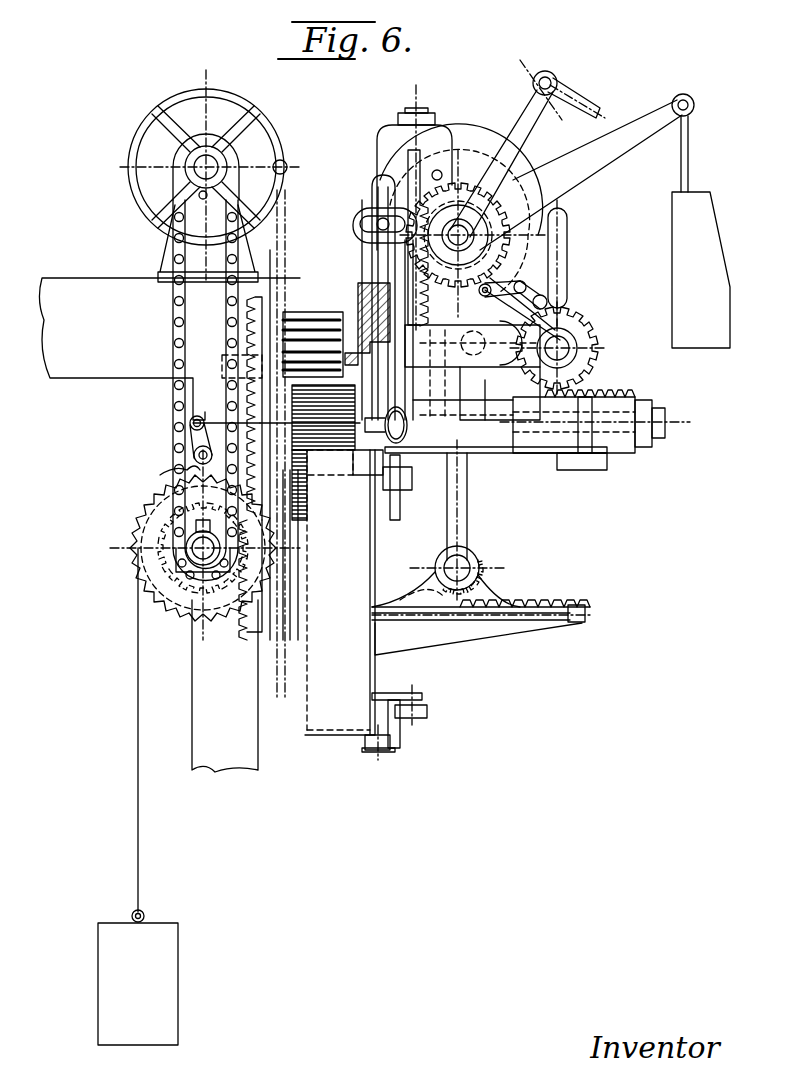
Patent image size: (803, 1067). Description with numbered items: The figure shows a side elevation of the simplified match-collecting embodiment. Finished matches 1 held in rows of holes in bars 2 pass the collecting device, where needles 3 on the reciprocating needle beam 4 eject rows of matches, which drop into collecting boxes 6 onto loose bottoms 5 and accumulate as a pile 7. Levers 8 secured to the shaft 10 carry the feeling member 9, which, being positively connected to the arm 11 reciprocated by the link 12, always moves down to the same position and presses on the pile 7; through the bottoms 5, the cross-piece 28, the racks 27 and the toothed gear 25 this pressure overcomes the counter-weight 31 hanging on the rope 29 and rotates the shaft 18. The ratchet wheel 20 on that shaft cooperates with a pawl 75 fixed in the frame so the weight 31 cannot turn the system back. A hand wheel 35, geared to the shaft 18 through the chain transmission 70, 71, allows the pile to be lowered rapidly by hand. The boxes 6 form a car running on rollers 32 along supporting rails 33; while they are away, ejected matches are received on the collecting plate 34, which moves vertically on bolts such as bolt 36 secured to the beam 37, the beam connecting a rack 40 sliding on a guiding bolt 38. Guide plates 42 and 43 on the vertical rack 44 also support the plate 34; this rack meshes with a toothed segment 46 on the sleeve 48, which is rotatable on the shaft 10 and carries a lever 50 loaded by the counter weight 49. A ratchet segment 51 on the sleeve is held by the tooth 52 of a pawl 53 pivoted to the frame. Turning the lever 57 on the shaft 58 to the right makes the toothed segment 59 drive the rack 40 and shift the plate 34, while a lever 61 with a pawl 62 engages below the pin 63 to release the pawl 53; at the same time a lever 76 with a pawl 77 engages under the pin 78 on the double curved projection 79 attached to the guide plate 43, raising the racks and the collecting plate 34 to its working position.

The finished matches 1 is at (325, 318).
The bars 2 is at (283, 264).
The needles 3 is at (285, 322).
The needle beam 4 is at (224, 362).
The loose bottoms 5 is at (342, 578).
The collecting boxes 6 is at (305, 718).
The pile of finished matches 7 is at (356, 405).
The levers 8 is at (360, 212).
The feeling member 9 is at (358, 268).
The shaft 10 is at (462, 228).
The lever 11 is at (525, 85).
The link 12 is at (575, 96).
The shaft 18 is at (200, 553).
The ratchet wheel 20 is at (160, 608).
The toothed gear 25 is at (140, 572).
The racks 27 is at (250, 634).
The cross-piece 28 is at (300, 578).
The rope 29 is at (137, 812).
The counter-weight 31 is at (180, 980).
The rollers 32 is at (405, 480).
The supporting rails 33 is at (400, 514).
The collecting plate 34 is at (490, 455).
The hand wheel 35 is at (262, 110).
The bolt 36 is at (585, 435).
The beam 37 is at (600, 465).
The guiding bolt 38 is at (640, 425).
The rack 40 is at (630, 395).
The guide plate 42 is at (428, 437).
The guide plate 43 is at (445, 440).
The rack 44 is at (413, 108).
The toothed segment 46 is at (372, 245).
The sleeve 48 is at (470, 222).
The counter weight 49 is at (723, 325).
The lever 50 is at (672, 100).
The ratchet segment 51 is at (408, 190).
The tooth 52 is at (581, 182).
The pawl 53 is at (455, 160).
The lever 57 is at (567, 247).
The shaft 58 is at (563, 345).
The toothed segment 59 is at (600, 350).
The lever 61 is at (485, 296).
The pawl 62 is at (522, 282).
The pin 63 is at (528, 290).
The chain transmission 70 is at (200, 190).
The chain transmission 71 is at (174, 330).
The pawl 75 is at (172, 477).
The lever 76 is at (500, 350).
The pawl 77 is at (456, 342).
The pin 78 is at (547, 300).
The double curved projection 79 is at (490, 382).